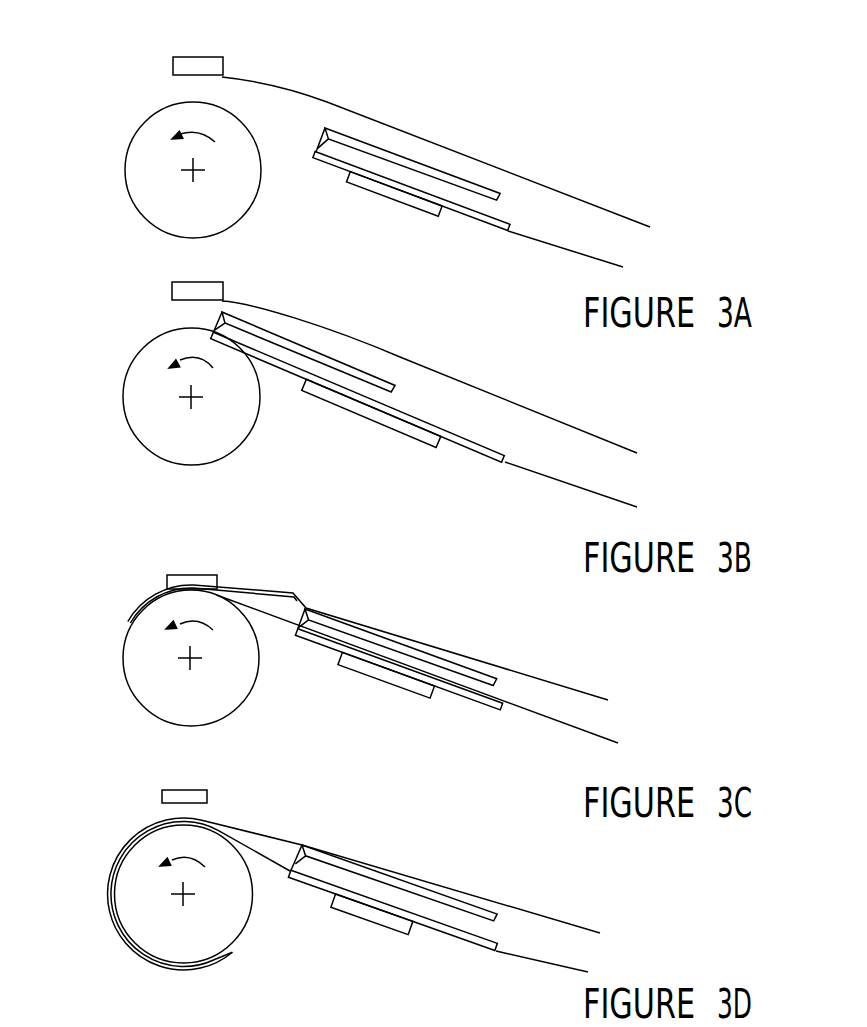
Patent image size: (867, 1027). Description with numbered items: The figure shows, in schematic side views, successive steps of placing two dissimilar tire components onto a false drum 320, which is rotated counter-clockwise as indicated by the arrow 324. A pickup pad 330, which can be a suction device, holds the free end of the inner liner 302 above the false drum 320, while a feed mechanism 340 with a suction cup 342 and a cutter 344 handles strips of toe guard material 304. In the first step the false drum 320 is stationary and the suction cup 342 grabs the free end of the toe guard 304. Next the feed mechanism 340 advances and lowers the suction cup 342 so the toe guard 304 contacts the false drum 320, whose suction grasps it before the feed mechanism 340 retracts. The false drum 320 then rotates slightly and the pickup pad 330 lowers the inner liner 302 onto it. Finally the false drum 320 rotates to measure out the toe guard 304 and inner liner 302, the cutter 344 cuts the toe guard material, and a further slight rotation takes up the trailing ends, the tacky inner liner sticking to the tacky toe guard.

In FIG. 3A, the inner liner 302 is at (493, 163).
In FIG. 3B, the inner liner 302 is at (318, 322).
In FIG. 3C, the inner liner 302 is at (263, 592).
In FIG. 3D, the inner liner 302 is at (257, 827).
In FIG. 3A, the toe guard 304 is at (553, 242).
In FIG. 3B, the toe guard 304 is at (545, 470).
In FIG. 3C, the toe guard 304 is at (553, 720).
In FIG. 3D, the toe guard 304 is at (550, 958).
In FIG. 3A, the false drum 320 is at (126, 180).
In FIG. 3B, the false drum 320 is at (128, 420).
In FIG. 3C, the false drum 320 is at (138, 697).
In FIG. 3D, the false drum 320 is at (247, 925).
In FIG. 3A, the arrow 324 is at (193, 132).
In FIG. 3B, the arrow 324 is at (190, 360).
In FIG. 3C, the arrow 324 is at (188, 623).
In FIG. 3D, the arrow 324 is at (176, 858).
In FIG. 3A, the pickup pad 330 is at (201, 57).
In FIG. 3B, the pickup pad 330 is at (213, 282).
In FIG. 3C, the pickup pad 330 is at (189, 575).
In FIG. 3D, the pickup pad 330 is at (185, 790).
In FIG. 3A, the feed mechanism 340 is at (325, 179).
In FIG. 3B, the feed mechanism 340 is at (316, 412).
In FIG. 3C, the feed mechanism 340 is at (298, 662).
In FIG. 3D, the feed mechanism 340 is at (340, 952).
In FIG. 3A, the suction cup 342 is at (335, 138).
In FIG. 3C, the cutter 344 is at (313, 610).
In FIG. 3D, the cutter 344 is at (312, 850).